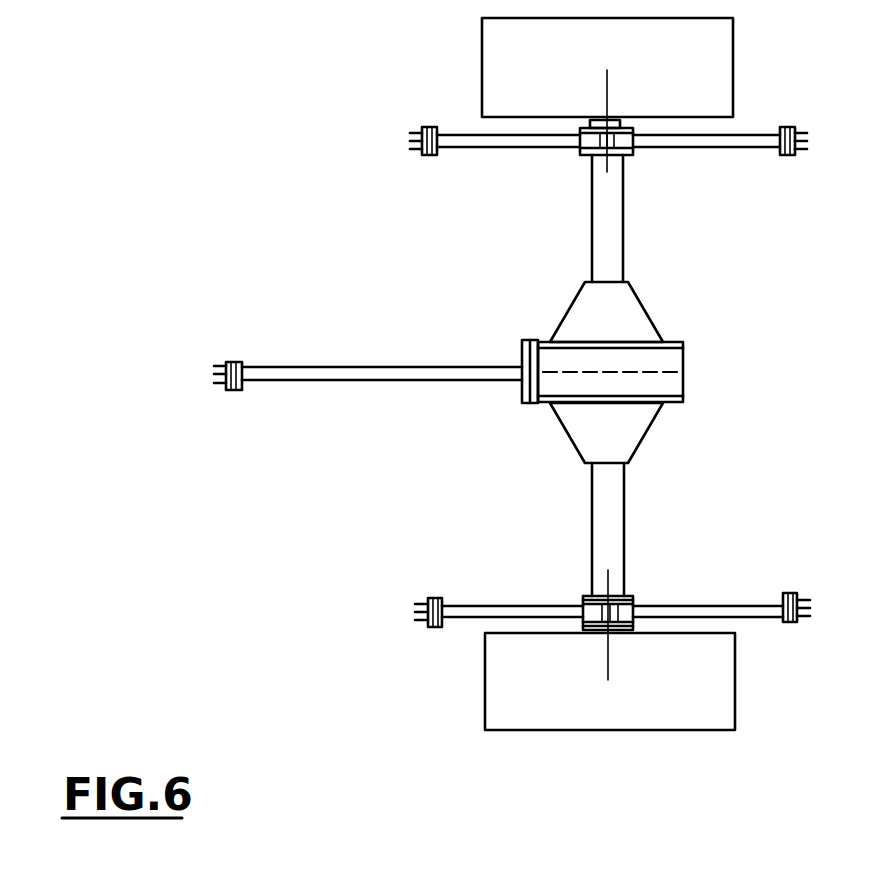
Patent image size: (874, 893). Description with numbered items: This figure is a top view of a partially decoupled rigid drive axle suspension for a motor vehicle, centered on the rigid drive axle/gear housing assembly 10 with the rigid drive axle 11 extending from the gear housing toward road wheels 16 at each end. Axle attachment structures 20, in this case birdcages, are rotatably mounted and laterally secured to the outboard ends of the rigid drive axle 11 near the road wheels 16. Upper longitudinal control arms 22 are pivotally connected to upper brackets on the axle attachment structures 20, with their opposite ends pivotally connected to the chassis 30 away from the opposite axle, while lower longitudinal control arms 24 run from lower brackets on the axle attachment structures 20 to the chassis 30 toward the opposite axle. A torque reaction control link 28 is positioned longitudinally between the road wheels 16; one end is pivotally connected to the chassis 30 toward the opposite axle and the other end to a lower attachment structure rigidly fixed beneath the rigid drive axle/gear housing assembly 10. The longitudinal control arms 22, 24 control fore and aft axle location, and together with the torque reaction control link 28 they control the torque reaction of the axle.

The rigid drive axle/gear housing assembly 10 is at (683, 372).
The rigid drive axle 11 is at (623, 230).
The road wheels 16 is at (482, 62).
The axle attachment structures 20 is at (623, 158).
The upper longitudinal control arms 22 is at (757, 148).
The lower longitudinal control arms 24 is at (533, 147).
The torque reaction control link 28 is at (460, 378).
The chassis 30 is at (428, 155).